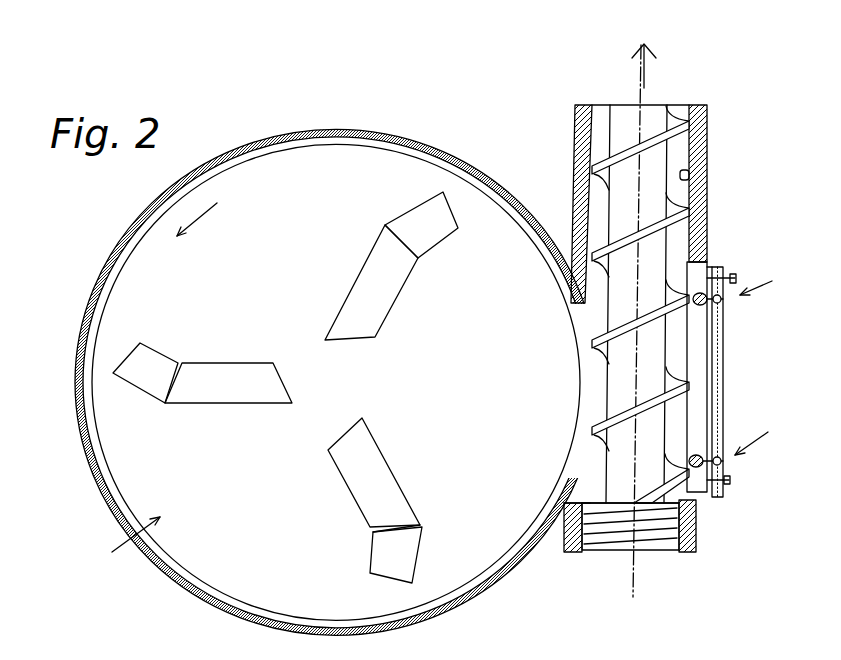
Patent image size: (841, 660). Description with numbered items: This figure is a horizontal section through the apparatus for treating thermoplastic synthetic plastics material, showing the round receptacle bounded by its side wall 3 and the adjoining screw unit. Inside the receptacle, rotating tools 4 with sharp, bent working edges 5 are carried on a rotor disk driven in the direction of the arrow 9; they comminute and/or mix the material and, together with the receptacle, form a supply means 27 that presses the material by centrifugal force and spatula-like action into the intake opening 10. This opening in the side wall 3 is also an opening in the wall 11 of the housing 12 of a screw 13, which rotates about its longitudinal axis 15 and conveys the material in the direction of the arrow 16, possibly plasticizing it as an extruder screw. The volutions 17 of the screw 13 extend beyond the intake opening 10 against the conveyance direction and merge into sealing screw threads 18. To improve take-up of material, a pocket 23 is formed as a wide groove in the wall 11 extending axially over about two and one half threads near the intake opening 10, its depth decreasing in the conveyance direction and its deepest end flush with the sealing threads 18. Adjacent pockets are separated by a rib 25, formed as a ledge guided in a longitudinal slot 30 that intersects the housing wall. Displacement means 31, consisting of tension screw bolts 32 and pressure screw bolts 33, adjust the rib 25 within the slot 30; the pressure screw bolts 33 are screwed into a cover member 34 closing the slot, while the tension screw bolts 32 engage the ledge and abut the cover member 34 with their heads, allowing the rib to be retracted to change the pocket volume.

The side wall 3 is at (190, 600).
The rotating tool 4 is at (397, 302).
The working edges 5 is at (193, 407).
The arrow 9 is at (202, 227).
The intake opening 10 is at (577, 330).
The wall 11 is at (691, 178).
The housing 12 is at (708, 148).
The screw 13 is at (657, 118).
The longitudinal axis 15 is at (633, 593).
The arrow 16 is at (650, 72).
The volutions 17 is at (582, 353).
The screw threads 18 is at (667, 555).
The pocket 23 is at (698, 500).
The rib 25 is at (698, 343).
The supply means 27 is at (123, 548).
The longitudinal slot 30 is at (712, 262).
The displacement means 31 is at (769, 364).
The tension screw bolts 32 is at (712, 305).
The pressure screw bolts 33 is at (733, 283).
The cover member 34 is at (722, 373).